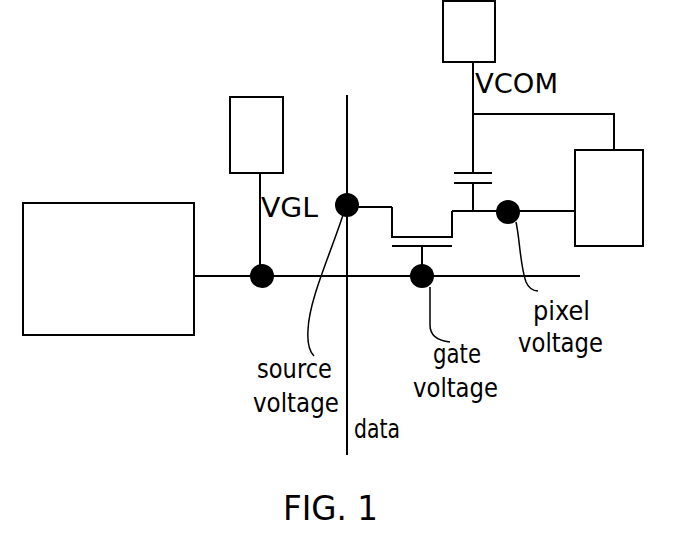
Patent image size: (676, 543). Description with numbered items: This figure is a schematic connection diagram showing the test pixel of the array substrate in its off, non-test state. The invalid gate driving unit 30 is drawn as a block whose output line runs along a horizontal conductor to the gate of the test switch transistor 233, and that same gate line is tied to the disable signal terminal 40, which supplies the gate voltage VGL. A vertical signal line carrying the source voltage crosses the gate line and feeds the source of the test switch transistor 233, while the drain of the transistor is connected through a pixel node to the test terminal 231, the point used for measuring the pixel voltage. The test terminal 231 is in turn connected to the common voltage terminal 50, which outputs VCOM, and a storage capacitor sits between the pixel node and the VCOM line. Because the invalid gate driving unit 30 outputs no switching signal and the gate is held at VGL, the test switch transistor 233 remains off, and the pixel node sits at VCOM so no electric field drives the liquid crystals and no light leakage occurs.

The invalid gate driving unit 30 is at (108, 269).
The disable signal terminal 40 is at (256, 135).
The common voltage terminal 50 is at (469, 31).
The test terminal 231 is at (609, 198).
The test switch transistor 233 is at (410, 237).